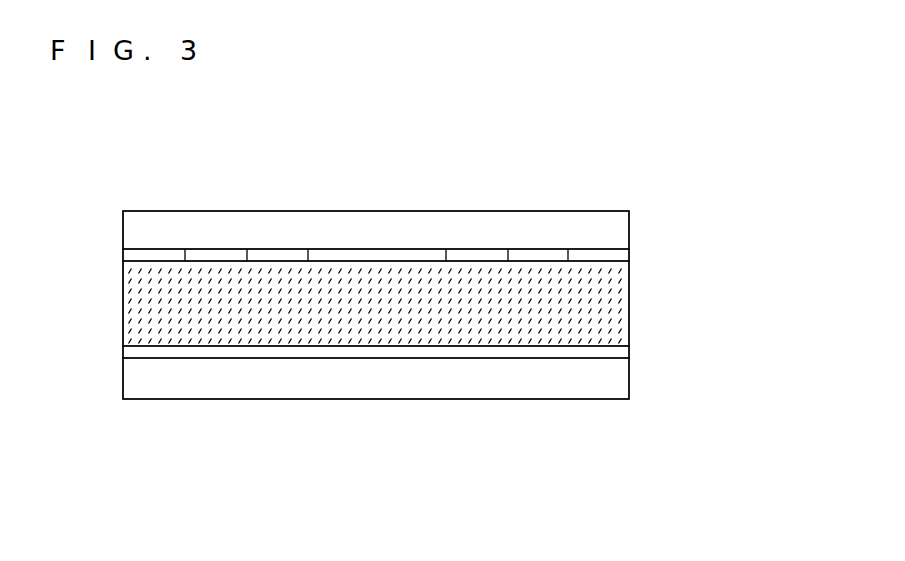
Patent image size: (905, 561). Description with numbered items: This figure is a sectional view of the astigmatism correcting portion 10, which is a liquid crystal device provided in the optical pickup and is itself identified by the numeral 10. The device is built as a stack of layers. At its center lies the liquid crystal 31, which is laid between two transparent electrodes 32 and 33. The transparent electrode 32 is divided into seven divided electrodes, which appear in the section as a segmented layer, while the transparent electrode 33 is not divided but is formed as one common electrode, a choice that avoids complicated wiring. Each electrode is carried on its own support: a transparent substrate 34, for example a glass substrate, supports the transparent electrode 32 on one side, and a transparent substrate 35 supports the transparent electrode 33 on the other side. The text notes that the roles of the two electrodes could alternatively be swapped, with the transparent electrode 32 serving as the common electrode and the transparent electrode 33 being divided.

The astigmatism correcting portion 10 is at (527, 130).
The liquid crystal 31 is at (690, 295).
The transparent electrode 32 is at (695, 235).
The transparent electrode 33 is at (707, 357).
The transparent substrate 34 is at (697, 190).
The transparent substrate 35 is at (705, 407).